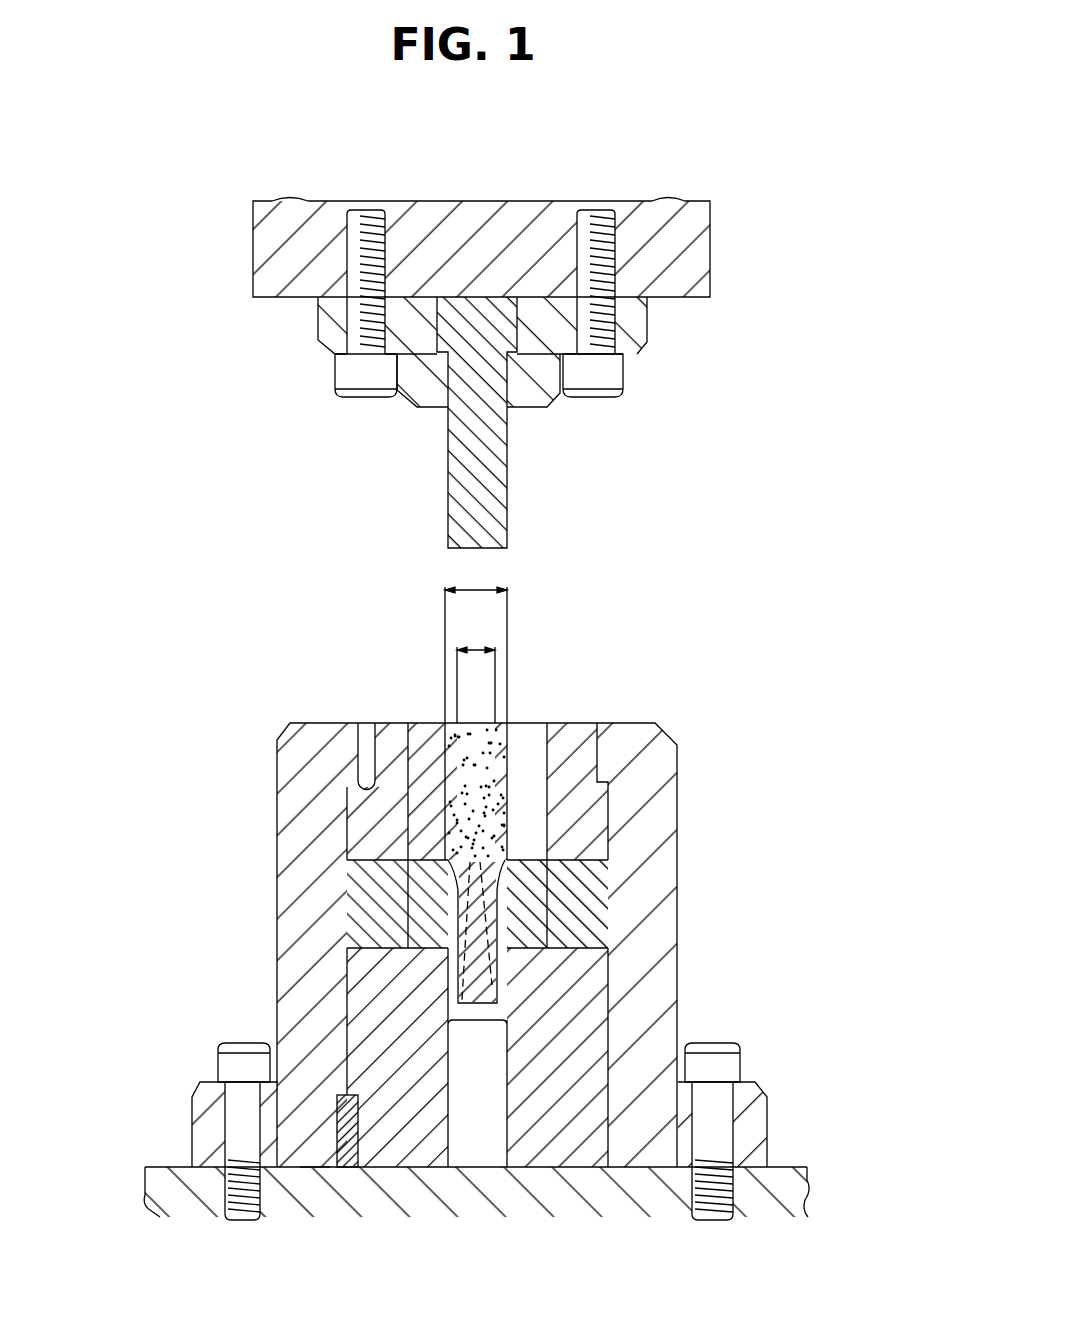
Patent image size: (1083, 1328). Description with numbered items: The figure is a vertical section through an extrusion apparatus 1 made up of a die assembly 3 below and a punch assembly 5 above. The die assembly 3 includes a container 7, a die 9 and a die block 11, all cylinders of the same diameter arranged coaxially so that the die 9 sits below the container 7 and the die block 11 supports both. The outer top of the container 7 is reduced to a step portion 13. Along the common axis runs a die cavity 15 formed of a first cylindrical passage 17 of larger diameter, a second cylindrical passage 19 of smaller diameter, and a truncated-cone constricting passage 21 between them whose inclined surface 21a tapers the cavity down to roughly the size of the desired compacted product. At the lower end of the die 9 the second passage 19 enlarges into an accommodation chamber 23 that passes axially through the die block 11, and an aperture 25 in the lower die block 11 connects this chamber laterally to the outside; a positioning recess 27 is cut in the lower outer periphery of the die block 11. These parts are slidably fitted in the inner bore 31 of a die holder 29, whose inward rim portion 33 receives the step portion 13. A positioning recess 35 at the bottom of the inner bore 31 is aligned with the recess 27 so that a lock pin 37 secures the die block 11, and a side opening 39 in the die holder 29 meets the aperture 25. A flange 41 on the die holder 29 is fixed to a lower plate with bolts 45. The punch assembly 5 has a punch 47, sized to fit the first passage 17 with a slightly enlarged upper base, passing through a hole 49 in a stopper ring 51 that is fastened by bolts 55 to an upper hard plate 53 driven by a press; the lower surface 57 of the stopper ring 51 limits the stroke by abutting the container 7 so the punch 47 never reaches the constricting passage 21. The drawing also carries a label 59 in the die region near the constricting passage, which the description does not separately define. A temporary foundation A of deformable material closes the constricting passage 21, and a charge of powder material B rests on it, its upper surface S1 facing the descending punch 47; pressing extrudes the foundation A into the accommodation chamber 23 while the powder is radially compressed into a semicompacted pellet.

The extrusion apparatus 1 is at (733, 523).
The die assembly 3 is at (665, 674).
The punch assembly 5 is at (655, 490).
The container 7 is at (570, 745).
The die 9 is at (565, 908).
The die block 11 is at (595, 1018).
The step portion 13 is at (370, 786).
The die cavity 15 is at (445, 875).
The first cylindrical passage 17 is at (597, 766).
The second cylindrical passage 19 is at (380, 933).
The constricting passage 21 is at (460, 887).
The inclined surface 21a is at (505, 862).
The accommodation chamber 23 is at (460, 953).
The aperture 25 is at (515, 1153).
The side opening 39 is at (484, 1143).
The positioning recess 27 is at (372, 1150).
The die holder 29 is at (304, 941).
The inner bore 31 is at (585, 995).
The rim portion 33 is at (352, 790).
The positioning recess 35 is at (316, 1160).
The lock pin 37 is at (343, 1095).
The flange 41 is at (752, 1110).
The bolts 45 is at (230, 1062).
The punch 47 is at (497, 512).
The hole 49 is at (447, 378).
The stopper ring 51 is at (638, 323).
The upper hard plate 53 is at (257, 238).
The bolts 55 is at (345, 375).
The lower surface 57 is at (545, 400).
The die bore 59 is at (522, 882).
The temporary foundation A is at (490, 945).
The powder material B is at (475, 767).
The upper surface S1 is at (500, 862).